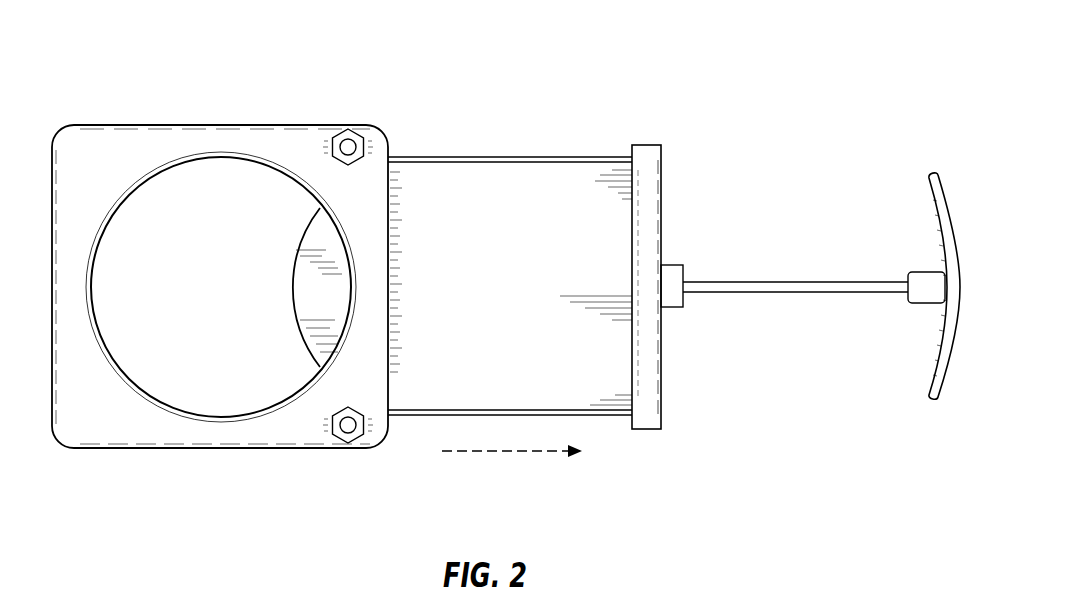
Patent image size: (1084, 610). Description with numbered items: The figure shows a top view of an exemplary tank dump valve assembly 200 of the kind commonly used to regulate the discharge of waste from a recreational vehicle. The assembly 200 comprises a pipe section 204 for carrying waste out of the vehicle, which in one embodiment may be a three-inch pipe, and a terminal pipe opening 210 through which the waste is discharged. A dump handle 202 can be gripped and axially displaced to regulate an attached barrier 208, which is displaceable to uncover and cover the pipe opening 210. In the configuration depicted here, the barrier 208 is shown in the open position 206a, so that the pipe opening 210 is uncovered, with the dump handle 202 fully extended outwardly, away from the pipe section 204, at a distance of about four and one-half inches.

The tank dump valve assembly 200 is at (824, 56).
The dump handle 202 is at (928, 188).
The pipe section 204 is at (281, 141).
The open position 206a is at (455, 472).
The barrier 208 is at (508, 178).
The terminal pipe opening 210 is at (158, 366).